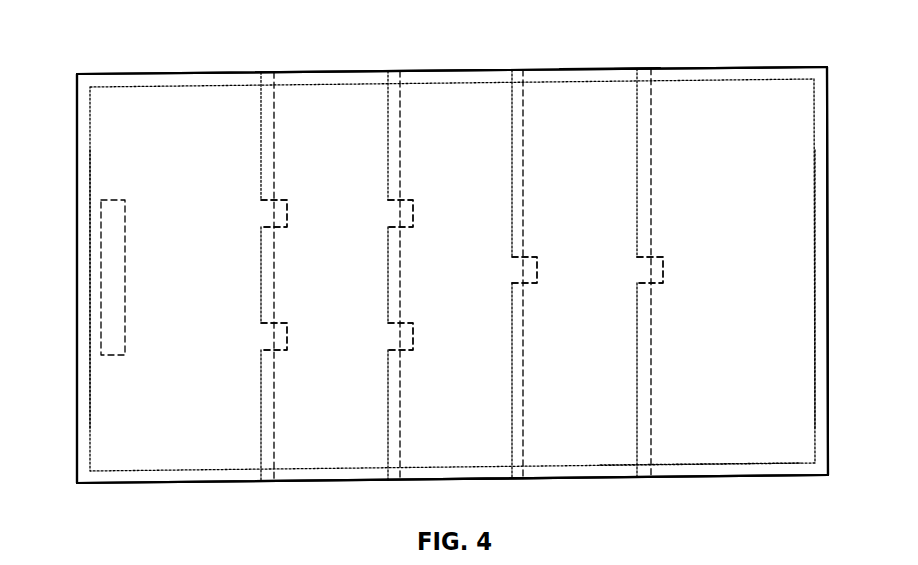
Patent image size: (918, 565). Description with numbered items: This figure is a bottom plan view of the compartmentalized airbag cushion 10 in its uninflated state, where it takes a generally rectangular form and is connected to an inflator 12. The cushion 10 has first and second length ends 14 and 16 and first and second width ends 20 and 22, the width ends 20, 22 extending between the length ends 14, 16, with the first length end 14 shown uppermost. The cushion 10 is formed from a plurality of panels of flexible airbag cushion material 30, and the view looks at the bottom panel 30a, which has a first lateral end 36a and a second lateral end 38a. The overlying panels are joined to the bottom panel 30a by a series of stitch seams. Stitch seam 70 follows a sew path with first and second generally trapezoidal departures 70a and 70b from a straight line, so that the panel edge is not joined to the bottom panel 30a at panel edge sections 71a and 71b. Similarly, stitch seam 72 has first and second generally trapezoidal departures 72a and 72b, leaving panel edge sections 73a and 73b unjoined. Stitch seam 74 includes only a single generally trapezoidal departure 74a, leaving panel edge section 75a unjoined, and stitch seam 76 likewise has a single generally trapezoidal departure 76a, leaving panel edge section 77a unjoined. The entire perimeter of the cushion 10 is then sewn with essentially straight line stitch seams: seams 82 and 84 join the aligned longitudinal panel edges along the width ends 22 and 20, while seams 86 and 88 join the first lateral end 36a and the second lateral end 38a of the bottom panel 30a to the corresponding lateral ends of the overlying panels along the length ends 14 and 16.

The airbag cushion 10 is at (726, 53).
The inflator 12 is at (112, 199).
The first length end 14 is at (325, 62).
The second length end 16 is at (191, 492).
The first width end 20 is at (843, 157).
The second width end 22 is at (72, 183).
The panels of flexible airbag cushion material 30 is at (748, 172).
The bottom panel 30a is at (592, 428).
The first lateral end of bottom panel 36a is at (606, 68).
The second lateral end of bottom panel 38a is at (488, 478).
The stitch seam 70 is at (261, 402).
The first trapezoidal departure 70a is at (317, 196).
The second trapezoidal departure 70b is at (317, 323).
The panel edge section 71a is at (287, 211).
The panel edge section 71b is at (287, 336).
The stitch seam 72 is at (388, 400).
The first trapezoidal departure 72a is at (443, 196).
The second trapezoidal departure 72b is at (443, 323).
The panel edge section 73a is at (413, 211).
The panel edge section 73b is at (413, 336).
The stitch seam 74 is at (512, 400).
The trapezoidal departure 74a is at (566, 257).
The panel edge section 75a is at (537, 272).
The stitch seam 76 is at (637, 382).
The trapezoidal departure 76a is at (693, 257).
The panel edge section 77a is at (663, 273).
The stitch seam 82 is at (90, 425).
The stitch seam 84 is at (816, 383).
The stitch seam 86 is at (590, 81).
The stitch seam 88 is at (746, 462).